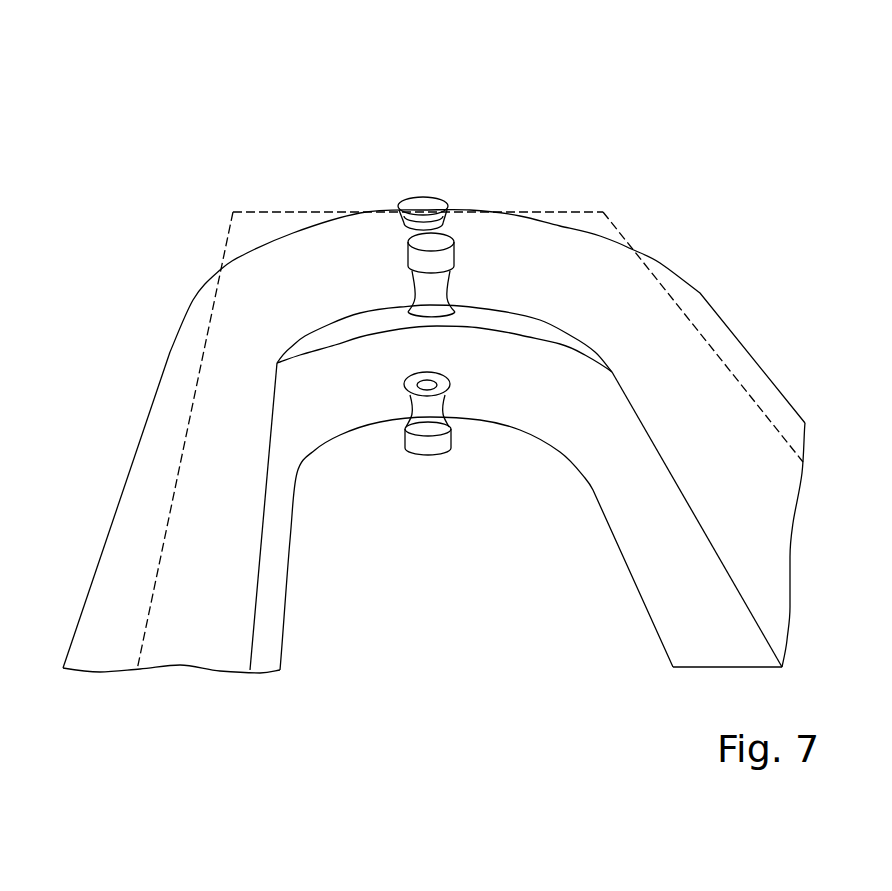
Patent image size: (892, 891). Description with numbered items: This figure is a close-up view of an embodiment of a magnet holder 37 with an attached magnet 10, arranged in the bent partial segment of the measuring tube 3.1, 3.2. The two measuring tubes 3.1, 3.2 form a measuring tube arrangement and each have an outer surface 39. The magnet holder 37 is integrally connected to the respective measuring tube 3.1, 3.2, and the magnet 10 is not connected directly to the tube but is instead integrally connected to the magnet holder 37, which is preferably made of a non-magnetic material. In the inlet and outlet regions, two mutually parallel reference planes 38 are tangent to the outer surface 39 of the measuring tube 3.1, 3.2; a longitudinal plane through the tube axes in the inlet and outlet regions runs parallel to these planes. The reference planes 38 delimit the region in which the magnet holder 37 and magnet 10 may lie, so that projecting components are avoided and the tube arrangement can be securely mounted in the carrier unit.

The outer surface 39 is at (172, 357).
The measuring tube 3.1 is at (303, 280).
The magnet holder 37 is at (423, 297).
The magnet 10 is at (442, 250).
The measuring tube 3.2 is at (503, 385).
The reference plane 38 is at (693, 322).